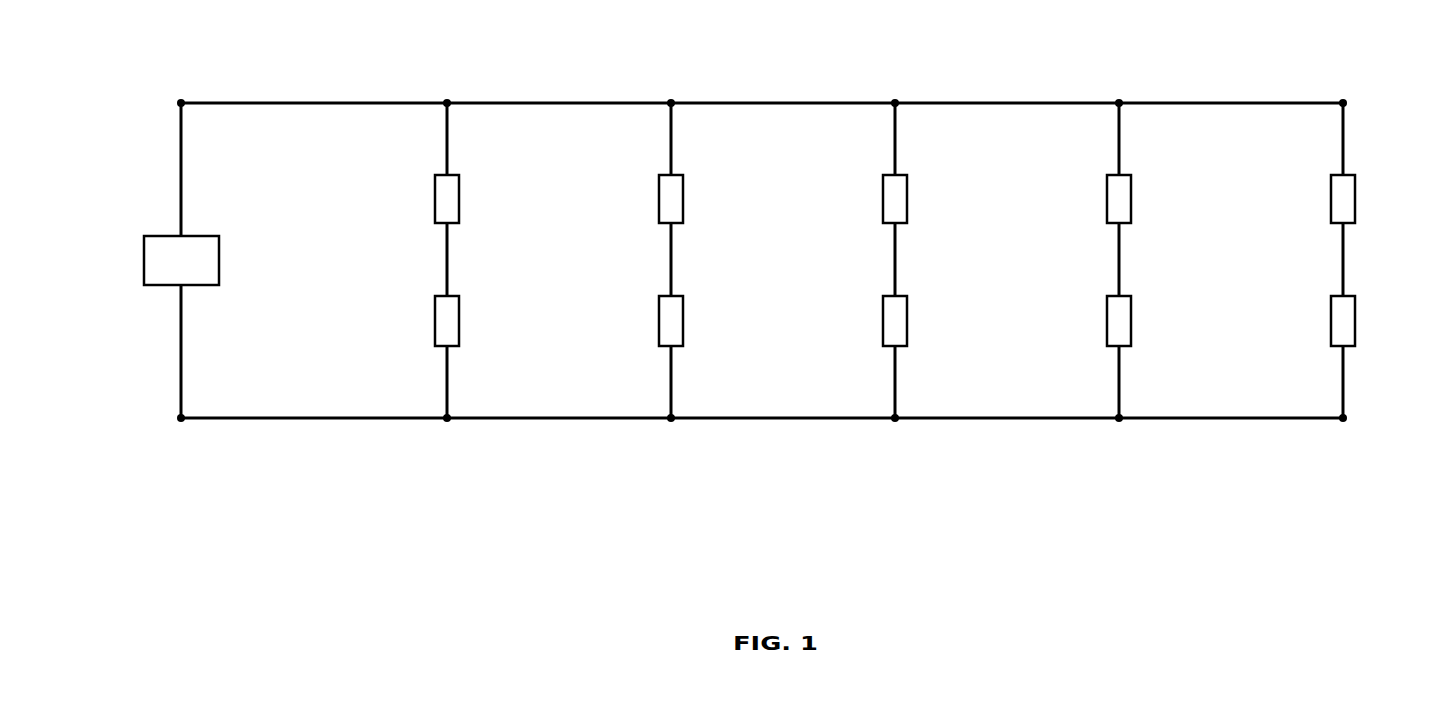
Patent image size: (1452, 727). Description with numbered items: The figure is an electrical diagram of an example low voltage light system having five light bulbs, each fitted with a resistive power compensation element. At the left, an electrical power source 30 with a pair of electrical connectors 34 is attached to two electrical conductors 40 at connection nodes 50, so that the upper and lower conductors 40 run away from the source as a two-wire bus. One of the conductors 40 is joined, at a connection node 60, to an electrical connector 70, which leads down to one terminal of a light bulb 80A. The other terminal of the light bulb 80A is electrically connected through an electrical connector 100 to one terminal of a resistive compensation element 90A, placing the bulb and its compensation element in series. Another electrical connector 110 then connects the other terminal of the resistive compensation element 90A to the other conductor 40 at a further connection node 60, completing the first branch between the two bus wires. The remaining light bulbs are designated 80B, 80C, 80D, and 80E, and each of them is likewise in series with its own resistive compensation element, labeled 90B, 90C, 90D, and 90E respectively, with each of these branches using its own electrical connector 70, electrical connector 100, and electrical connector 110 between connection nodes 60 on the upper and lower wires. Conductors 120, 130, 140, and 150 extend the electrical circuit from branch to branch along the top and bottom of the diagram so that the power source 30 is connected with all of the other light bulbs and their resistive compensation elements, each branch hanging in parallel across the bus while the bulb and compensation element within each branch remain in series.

The electrical power source 30 is at (201, 299).
The electrical connectors 34 is at (173, 165).
The electrical conductors 40 is at (311, 99).
The connection nodes 50 is at (176, 99).
The connection node 60 is at (454, 99).
The electrical connector 70 is at (437, 141).
The light bulb 80A is at (469, 203).
The light bulb 80B is at (693, 203).
The light bulb 80C is at (917, 203).
The light bulb 80D is at (1141, 203).
The light bulb 80E is at (1365, 203).
The resistive compensation element 90A is at (469, 318).
The resistive compensation element 90B is at (693, 318).
The resistive compensation element 90C is at (917, 318).
The resistive compensation element 90D is at (1141, 318).
The resistive compensation element 90E is at (1365, 318).
The electrical connector 100 is at (437, 258).
The electrical connector 110 is at (437, 376).
The conductor 120 is at (567, 99).
The conductor 130 is at (787, 99).
The conductor 140 is at (1000, 99).
The conductor 150 is at (1228, 99).